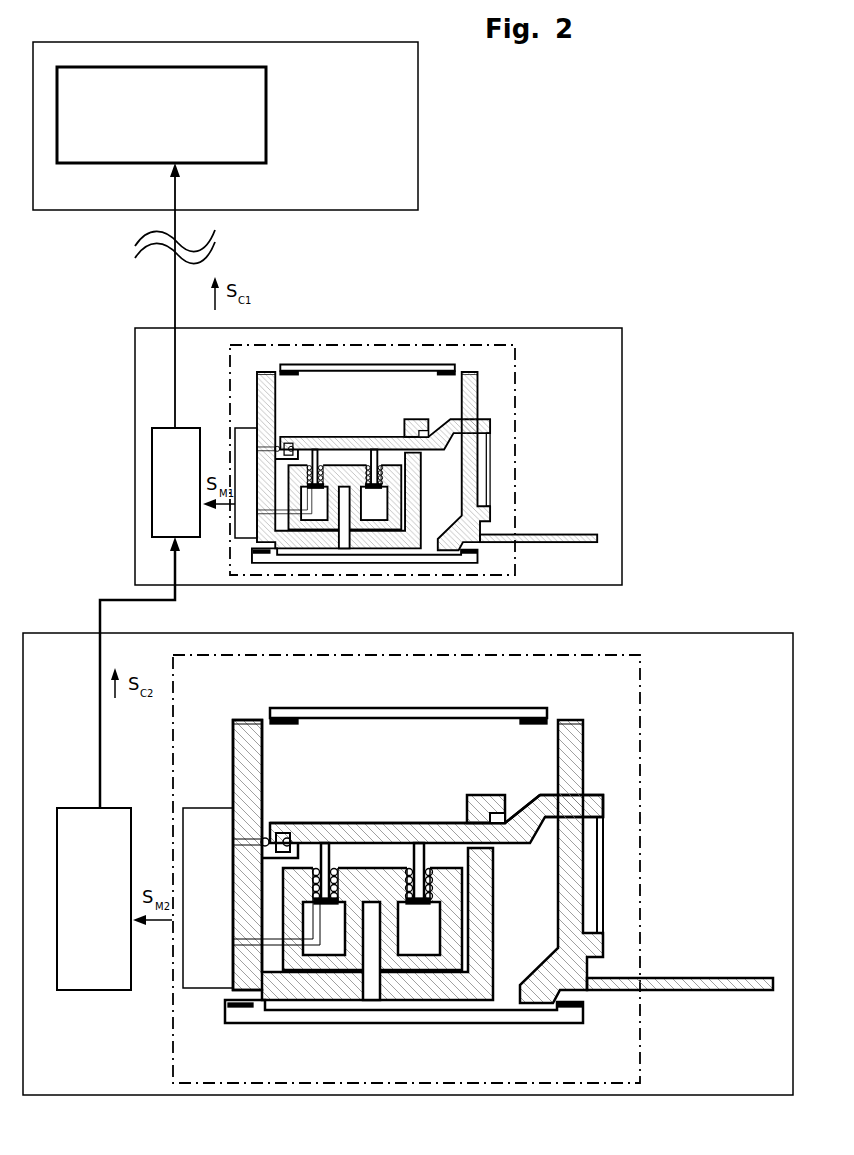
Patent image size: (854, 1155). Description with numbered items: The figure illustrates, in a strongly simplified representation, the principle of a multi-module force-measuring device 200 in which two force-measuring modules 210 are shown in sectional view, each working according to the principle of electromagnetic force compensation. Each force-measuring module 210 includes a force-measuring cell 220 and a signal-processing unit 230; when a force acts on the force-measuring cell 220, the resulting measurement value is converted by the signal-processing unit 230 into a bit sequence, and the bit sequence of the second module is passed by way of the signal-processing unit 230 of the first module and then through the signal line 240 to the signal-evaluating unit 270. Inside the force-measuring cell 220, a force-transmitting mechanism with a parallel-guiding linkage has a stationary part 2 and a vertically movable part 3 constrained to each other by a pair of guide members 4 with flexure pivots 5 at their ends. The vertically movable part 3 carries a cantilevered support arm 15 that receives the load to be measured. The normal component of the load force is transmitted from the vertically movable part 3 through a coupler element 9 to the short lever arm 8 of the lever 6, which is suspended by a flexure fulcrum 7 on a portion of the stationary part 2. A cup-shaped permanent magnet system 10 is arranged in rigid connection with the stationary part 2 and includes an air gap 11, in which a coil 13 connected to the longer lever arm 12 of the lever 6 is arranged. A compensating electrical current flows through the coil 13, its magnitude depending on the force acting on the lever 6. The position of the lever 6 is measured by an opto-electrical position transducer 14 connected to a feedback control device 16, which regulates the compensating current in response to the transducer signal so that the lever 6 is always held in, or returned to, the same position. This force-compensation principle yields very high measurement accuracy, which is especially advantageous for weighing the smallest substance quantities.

The stationary part 2 is at (250, 767).
The vertically movable part 3 is at (582, 745).
The guide members 4 is at (377, 715).
The flexure pivots 5 is at (267, 715).
The lever 6 is at (430, 822).
The flexure fulcrum 7 is at (512, 815).
The short lever arm 8 is at (588, 795).
The coupler element 9 is at (605, 847).
The cup-shaped permanent magnet system 10 is at (425, 963).
The air gap 11 is at (432, 872).
The longer lever arm 12 is at (397, 832).
The coil 13 is at (432, 885).
The opto-electrical position transducer 14 is at (265, 835).
The cantilevered support arm 15 is at (657, 984).
The feedback control device 16 is at (202, 968).
The multi-module force-measuring device 200 is at (668, 102).
The force-measuring module 210 is at (568, 328).
The force-measuring cell 220 is at (518, 403).
The signal-processing unit 230 is at (128, 709).
The signal line 240 is at (172, 297).
The signal-evaluating unit 270 is at (161, 115).